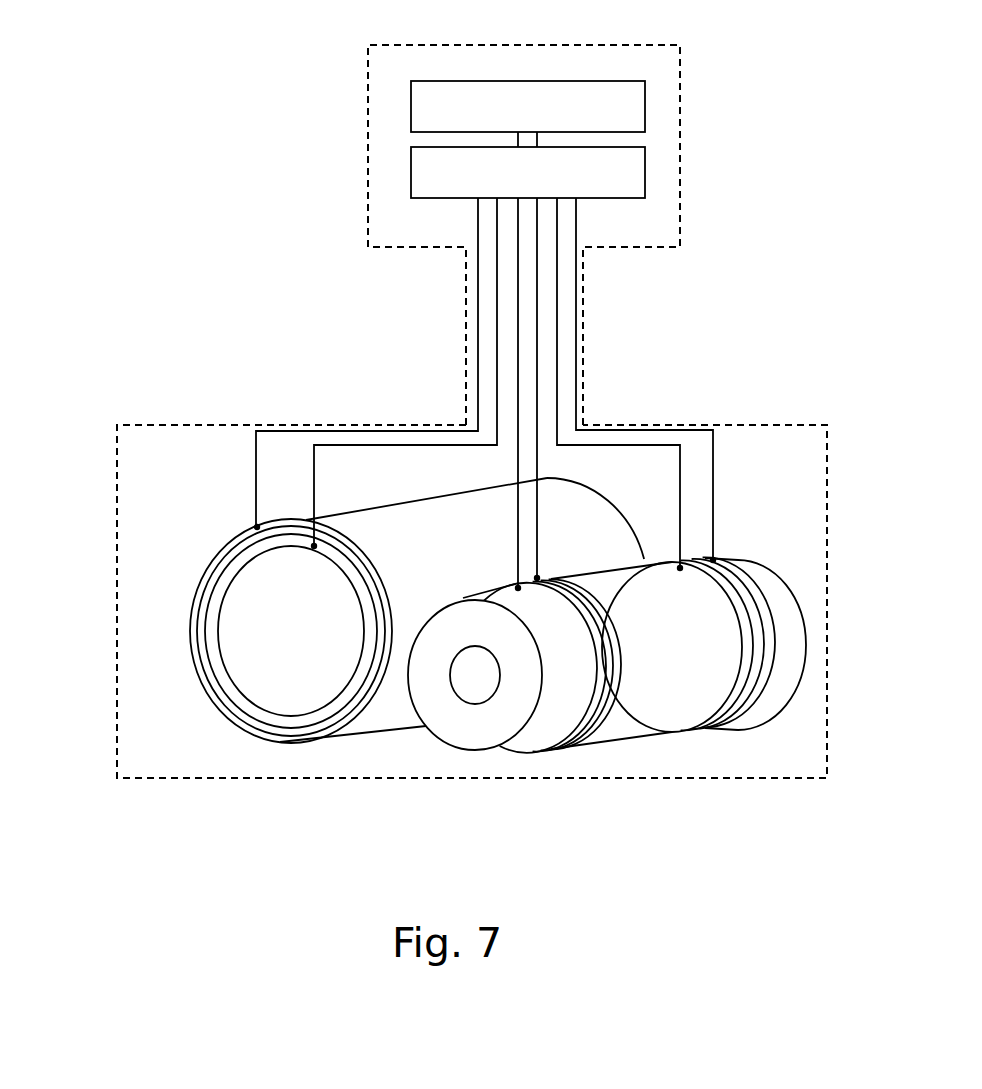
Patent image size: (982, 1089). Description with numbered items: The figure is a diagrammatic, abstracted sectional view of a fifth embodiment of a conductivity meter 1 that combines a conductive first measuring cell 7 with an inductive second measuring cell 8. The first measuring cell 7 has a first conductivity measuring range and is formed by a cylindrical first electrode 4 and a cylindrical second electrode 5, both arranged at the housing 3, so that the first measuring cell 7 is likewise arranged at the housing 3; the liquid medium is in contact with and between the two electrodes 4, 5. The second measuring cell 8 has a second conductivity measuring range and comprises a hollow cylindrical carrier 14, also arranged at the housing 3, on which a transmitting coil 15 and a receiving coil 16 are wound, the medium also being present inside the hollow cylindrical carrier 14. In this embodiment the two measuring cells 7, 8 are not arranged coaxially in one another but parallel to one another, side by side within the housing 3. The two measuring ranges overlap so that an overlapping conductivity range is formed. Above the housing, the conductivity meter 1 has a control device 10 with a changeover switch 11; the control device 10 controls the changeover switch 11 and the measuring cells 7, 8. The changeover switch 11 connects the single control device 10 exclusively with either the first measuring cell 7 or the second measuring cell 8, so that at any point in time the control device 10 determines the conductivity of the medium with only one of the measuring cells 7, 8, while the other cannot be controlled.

The conductivity meter 1 is at (759, 234).
The housing 3 is at (803, 760).
The first electrode 4 is at (195, 640).
The second electrode 5 is at (245, 700).
The first measuring cell 7 is at (408, 549).
The second measuring cell 8 is at (795, 580).
The control device 10 is at (465, 119).
The changeover switch 11 is at (465, 184).
The hollow cylindrical carrier 14 is at (463, 715).
The transmitting coil 15 is at (578, 752).
The receiving coil 16 is at (723, 740).